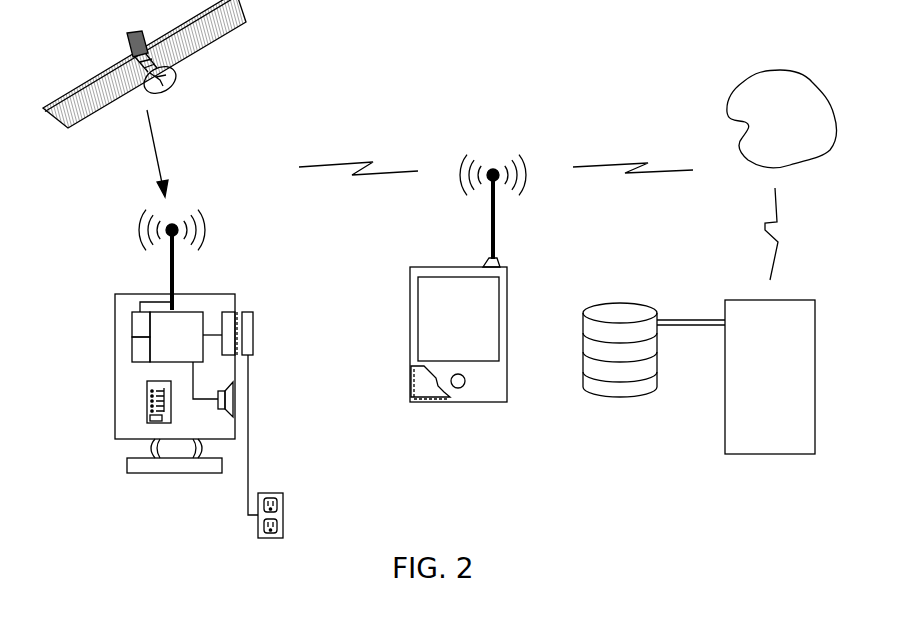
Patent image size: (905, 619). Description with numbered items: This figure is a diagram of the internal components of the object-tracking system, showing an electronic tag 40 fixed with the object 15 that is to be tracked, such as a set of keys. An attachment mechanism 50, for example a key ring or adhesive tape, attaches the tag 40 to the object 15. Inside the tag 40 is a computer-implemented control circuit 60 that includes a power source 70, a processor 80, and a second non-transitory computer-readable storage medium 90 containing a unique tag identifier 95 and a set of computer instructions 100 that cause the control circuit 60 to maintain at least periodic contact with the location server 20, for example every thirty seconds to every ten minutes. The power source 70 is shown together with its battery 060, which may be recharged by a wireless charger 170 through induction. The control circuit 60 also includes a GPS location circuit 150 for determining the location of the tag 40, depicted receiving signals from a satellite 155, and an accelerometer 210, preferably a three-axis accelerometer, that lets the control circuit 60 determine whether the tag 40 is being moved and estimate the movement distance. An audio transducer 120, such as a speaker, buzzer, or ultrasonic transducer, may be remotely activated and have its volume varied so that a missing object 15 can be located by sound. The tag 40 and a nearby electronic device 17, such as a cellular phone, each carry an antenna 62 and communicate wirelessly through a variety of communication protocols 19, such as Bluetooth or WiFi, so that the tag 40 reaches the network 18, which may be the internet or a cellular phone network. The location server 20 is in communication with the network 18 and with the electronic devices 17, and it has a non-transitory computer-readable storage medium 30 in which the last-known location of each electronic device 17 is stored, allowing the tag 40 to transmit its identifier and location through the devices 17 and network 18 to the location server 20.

The satellite 155 is at (115, 88).
The antenna 62 is at (212, 220).
The electronic tag 40 is at (115, 333).
The control circuit 60 is at (122, 366).
The GPS location circuit 150 is at (138, 322).
The accelerometer 210 is at (138, 352).
The processor 80 is at (189, 330).
The power source 70 is at (234, 312).
The battery 060 is at (262, 425).
The wireless charger 170 is at (253, 337).
The second non-transitory computer-readable storage medium 90 is at (147, 400).
The unique tag identifier 95 is at (150, 420).
The set of computer instructions 100 is at (155, 405).
The audio transducer 120 is at (231, 403).
The attachment mechanism 50 is at (203, 447).
The object 15 is at (148, 465).
The communication protocols 19 is at (362, 162).
The electronic devices 17 is at (507, 315).
The network 18 is at (743, 82).
The location server 20 is at (733, 300).
The non-transitory computer-readable storage medium 30 is at (628, 387).